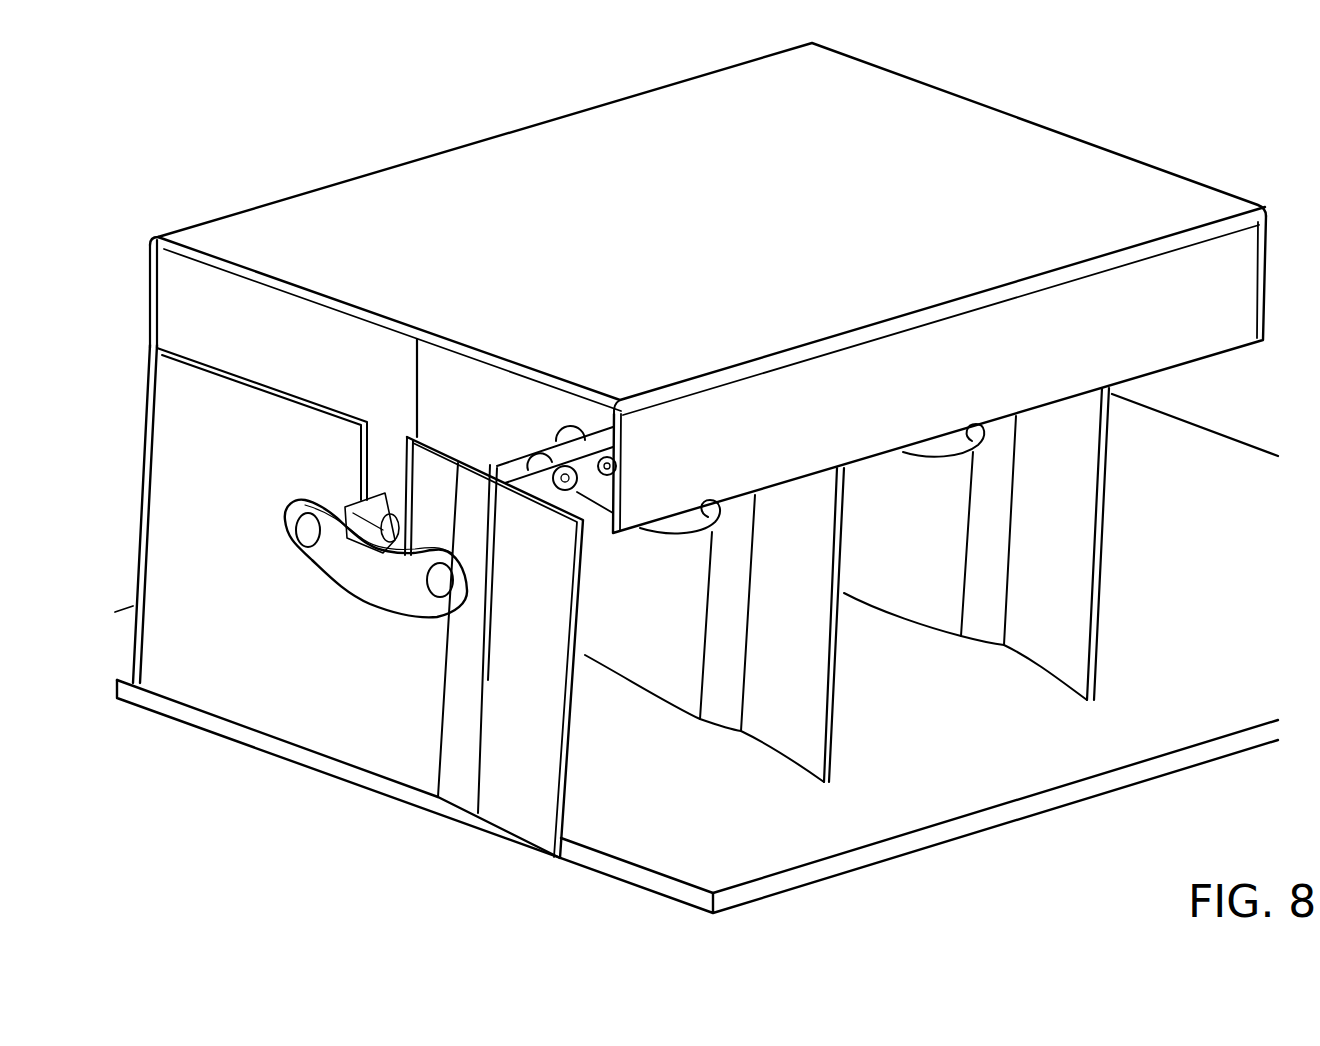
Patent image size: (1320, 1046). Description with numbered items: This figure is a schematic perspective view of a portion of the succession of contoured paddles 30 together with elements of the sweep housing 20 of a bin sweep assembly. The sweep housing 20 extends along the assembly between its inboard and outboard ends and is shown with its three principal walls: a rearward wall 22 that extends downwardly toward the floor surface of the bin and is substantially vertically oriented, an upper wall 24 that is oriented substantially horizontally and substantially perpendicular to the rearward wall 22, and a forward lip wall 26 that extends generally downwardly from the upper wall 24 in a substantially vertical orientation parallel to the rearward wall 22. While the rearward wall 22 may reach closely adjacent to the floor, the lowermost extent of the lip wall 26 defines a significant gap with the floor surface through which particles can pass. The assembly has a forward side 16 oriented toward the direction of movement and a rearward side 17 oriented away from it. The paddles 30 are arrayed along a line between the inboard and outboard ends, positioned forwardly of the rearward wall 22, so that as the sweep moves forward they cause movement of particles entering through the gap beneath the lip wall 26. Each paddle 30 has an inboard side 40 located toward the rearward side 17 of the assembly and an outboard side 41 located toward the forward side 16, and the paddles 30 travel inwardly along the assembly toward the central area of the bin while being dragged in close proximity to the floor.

The forward side 16 is at (937, 784).
The rearward side 17 is at (268, 146).
The sweep housing 20 is at (1106, 113).
The rearward wall 22 is at (156, 294).
The upper wall 24 is at (1150, 163).
The forward lip wall 26 is at (1208, 355).
The paddles 30 is at (318, 782).
The inboard side 40 is at (127, 656).
The outboard side 41 is at (586, 818).